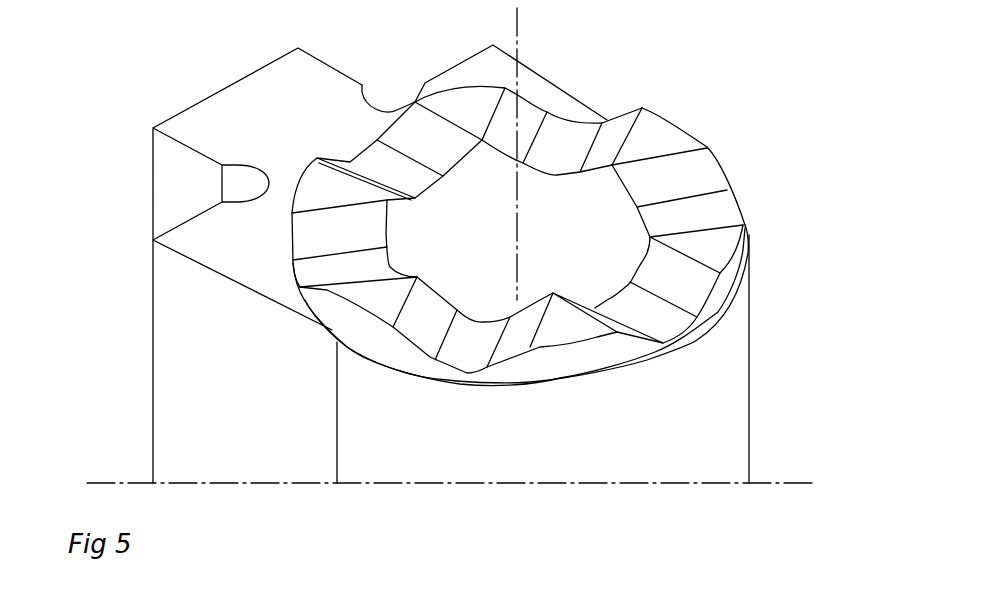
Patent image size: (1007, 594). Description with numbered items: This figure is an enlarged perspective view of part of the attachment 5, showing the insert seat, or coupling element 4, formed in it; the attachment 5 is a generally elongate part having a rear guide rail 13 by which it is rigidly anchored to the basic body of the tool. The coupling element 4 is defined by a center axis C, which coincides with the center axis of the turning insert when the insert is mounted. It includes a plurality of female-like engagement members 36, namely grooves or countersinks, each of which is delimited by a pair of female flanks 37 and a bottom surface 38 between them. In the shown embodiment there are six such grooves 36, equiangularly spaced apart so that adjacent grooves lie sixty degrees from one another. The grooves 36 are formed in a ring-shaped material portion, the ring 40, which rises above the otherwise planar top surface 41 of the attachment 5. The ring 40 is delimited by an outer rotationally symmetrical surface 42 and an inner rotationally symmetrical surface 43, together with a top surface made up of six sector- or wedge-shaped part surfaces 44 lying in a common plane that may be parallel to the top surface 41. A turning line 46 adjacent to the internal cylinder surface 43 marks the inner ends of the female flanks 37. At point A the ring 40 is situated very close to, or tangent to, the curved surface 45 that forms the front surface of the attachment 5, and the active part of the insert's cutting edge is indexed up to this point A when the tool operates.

The insert seat 4 is at (690, 90).
The attachment 5 is at (770, 329).
The rear guide rail 13 is at (340, 67).
The engagement members 36 is at (482, 305).
The female flanks 37 is at (423, 333).
The bottom surface 38 is at (462, 360).
The ring 40 is at (305, 326).
The top surface 41 is at (290, 128).
The outer rotationally symmetrical surface 42 is at (598, 365).
The inner rotationally symmetrical surface 43 is at (480, 180).
The wedge-shaped part surfaces 44 is at (683, 136).
The curved surface 45 is at (706, 458).
The turning line 46 is at (613, 167).
The point A is at (680, 343).
The center axis C is at (517, 42).